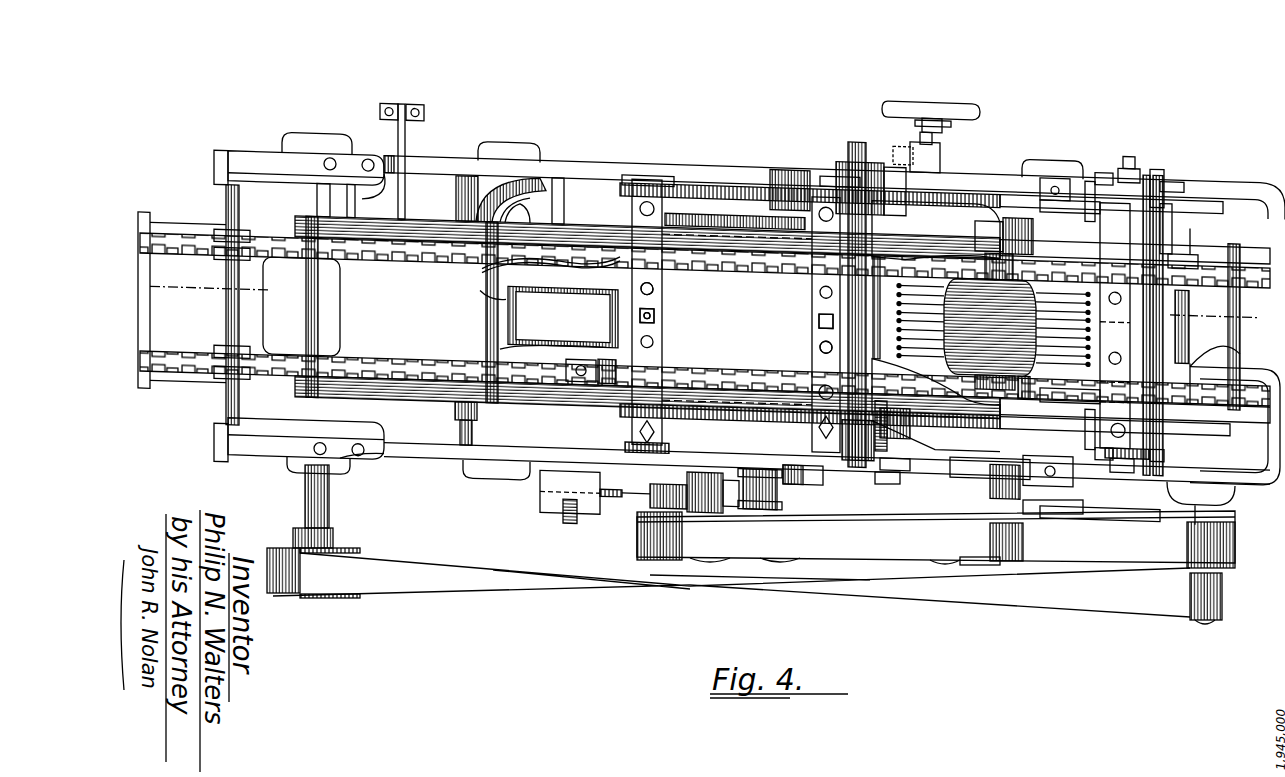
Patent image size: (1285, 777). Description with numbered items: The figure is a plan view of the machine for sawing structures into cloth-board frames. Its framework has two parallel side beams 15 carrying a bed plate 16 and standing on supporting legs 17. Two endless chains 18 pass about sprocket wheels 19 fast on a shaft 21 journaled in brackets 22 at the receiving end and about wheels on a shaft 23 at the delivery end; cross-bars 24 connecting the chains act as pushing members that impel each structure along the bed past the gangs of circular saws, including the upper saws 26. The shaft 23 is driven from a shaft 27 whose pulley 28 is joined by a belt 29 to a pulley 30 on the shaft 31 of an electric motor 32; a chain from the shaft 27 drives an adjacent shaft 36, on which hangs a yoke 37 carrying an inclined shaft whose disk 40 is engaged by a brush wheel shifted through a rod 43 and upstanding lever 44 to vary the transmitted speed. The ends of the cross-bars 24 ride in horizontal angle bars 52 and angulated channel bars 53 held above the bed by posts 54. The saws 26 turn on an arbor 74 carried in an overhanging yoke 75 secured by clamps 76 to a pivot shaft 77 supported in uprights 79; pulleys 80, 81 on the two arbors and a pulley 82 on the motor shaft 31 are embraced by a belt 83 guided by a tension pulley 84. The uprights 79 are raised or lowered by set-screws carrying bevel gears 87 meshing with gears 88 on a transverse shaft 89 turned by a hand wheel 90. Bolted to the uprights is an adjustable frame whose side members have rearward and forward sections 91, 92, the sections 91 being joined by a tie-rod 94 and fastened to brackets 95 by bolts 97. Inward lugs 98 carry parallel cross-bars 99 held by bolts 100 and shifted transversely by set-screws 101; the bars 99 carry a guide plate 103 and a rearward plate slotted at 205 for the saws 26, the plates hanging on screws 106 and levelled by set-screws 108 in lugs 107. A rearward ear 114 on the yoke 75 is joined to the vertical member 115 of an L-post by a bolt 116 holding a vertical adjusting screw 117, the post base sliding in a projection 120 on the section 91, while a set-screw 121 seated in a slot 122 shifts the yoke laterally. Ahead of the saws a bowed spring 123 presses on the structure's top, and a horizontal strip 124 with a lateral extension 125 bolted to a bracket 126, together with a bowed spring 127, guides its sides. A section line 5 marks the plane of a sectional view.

The section line 5 is at (712, 299).
The side beams 15 is at (450, 155).
The bed plate 16 is at (278, 322).
The supporting legs 17 is at (318, 140).
The endless chains 18 is at (188, 234).
The sprocket wheels 19 is at (170, 388).
The shaft 21 is at (222, 148).
The brackets 22 is at (250, 148).
The shaft 23 is at (1190, 300).
The cross-bars 24 is at (318, 303).
The circular saws 26 is at (1012, 306).
The shaft 27 is at (305, 598).
The pulley 28 is at (355, 597).
The belt 29 is at (1075, 598).
The pulley 30 is at (1178, 620).
The motor shaft 31 is at (1210, 628).
The electric motor 32 is at (1250, 368).
The shaft 36 is at (462, 458).
The yoke 37 is at (532, 185).
The disk 40 is at (521, 196).
The rod 43 is at (405, 140).
The lever 44 is at (404, 104).
The angle bars 52 is at (418, 230).
The channel bars 53 is at (700, 235).
The posts 54 is at (380, 190).
The arbor 74 is at (978, 566).
The yoke 75 is at (936, 310).
The clamps 76 is at (818, 235).
The pivot shaft 77 is at (852, 160).
The uprights 79 is at (892, 166).
The pulley 80 is at (740, 562).
The pulley 81 is at (945, 563).
The pulley 82 is at (1150, 578).
The belt 83 is at (810, 560).
The tension pulley 84 is at (655, 562).
The bevel gear 87 is at (945, 165).
The bevel gear 88 is at (935, 160).
The transverse shaft 89 is at (935, 100).
The hand wheel 90 is at (982, 100).
The rearwardly extending sections 91 is at (1150, 172).
The forwardly extending sections 92 is at (720, 190).
The tie-rod 94 is at (1172, 200).
The brackets 95 is at (1089, 180).
The bolts 97 is at (1130, 168).
The lugs 98 is at (1104, 174).
The cross-bars 99 is at (1165, 195).
The bolts 100 is at (640, 200).
The set-screws 101 is at (648, 178).
The guide plate 103 is at (737, 305).
The screws 106 is at (655, 288).
The lugs 107 is at (655, 322).
The set-screws 108 is at (656, 316).
The ear 114 is at (940, 545).
The vertical member 115 is at (1100, 393).
The bolt 116 is at (1048, 516).
The vertical adjusting screw 117 is at (910, 464).
The projection 120 is at (1040, 486).
The set-screw 121 is at (885, 486).
The slot 122 is at (936, 428).
The bowed spring 123 is at (563, 316).
The horizontal strip 124 is at (500, 348).
The lateral extension 125 is at (560, 385).
The bracket 126 is at (603, 385).
The bowed spring 127 is at (580, 262).
The slot 205 is at (1070, 296).